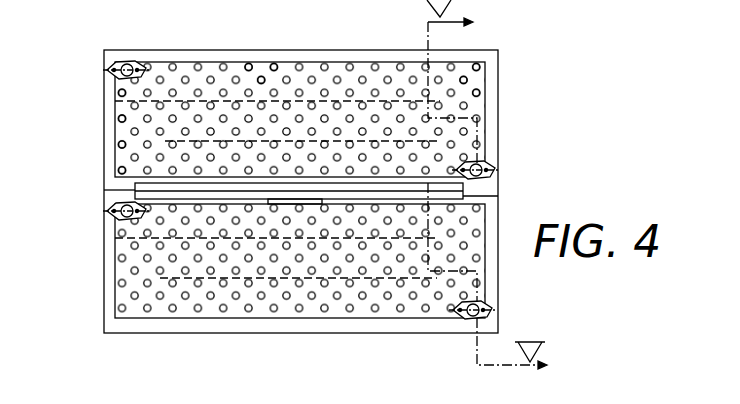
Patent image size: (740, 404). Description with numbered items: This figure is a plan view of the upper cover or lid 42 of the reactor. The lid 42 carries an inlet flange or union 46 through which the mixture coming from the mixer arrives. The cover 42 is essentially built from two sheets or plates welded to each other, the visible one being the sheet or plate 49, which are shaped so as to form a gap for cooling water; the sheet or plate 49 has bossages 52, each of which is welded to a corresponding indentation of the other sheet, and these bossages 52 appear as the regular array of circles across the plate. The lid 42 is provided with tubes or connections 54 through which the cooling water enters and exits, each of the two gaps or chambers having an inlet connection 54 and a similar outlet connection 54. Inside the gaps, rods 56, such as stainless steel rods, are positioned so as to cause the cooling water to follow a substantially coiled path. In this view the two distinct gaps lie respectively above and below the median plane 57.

The upper lid 42 is at (505, 117).
The inlet flange or union 46 is at (287, 205).
The sheet or plate 49 is at (188, 72).
The bossages 52 is at (273, 70).
The tubes or connections 54 is at (137, 57).
The rods 56 is at (314, 100).
The median plane 57 is at (117, 190).